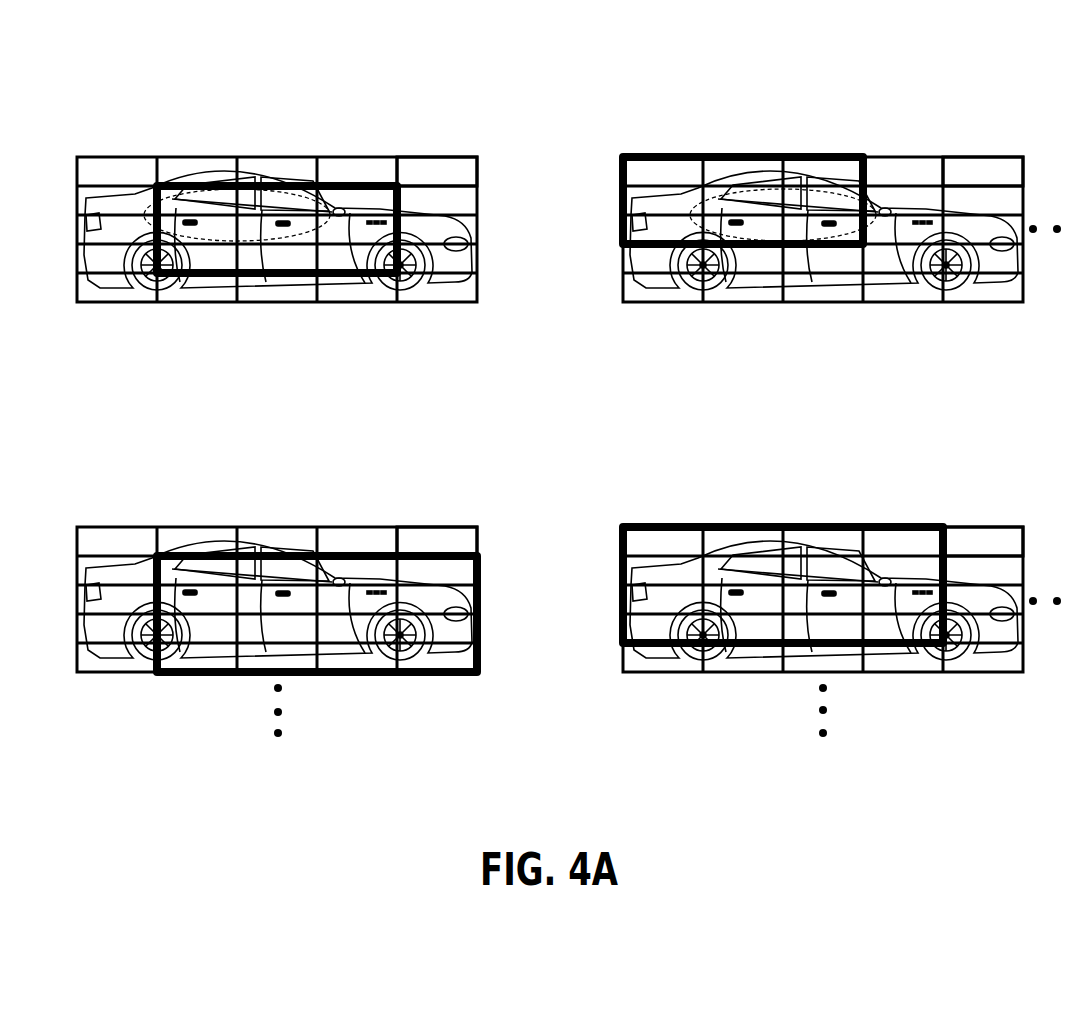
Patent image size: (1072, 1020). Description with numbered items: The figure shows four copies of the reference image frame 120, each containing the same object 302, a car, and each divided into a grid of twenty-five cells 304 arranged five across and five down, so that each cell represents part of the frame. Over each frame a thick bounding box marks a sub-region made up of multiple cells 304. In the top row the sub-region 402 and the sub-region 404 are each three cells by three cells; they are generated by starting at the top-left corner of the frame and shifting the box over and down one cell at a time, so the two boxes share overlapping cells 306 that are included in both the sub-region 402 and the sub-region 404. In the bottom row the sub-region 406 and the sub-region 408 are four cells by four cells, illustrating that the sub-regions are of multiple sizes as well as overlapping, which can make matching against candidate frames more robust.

The reference image frame 120 is at (695, 728).
The object 302 is at (150, 290).
The cells 304 is at (987, 543).
The overlapping cells 306 is at (298, 237).
The sub-region 402 is at (305, 180).
The sub-region 404 is at (820, 152).
The sub-region 406 is at (325, 677).
The sub-region 408 is at (877, 648).